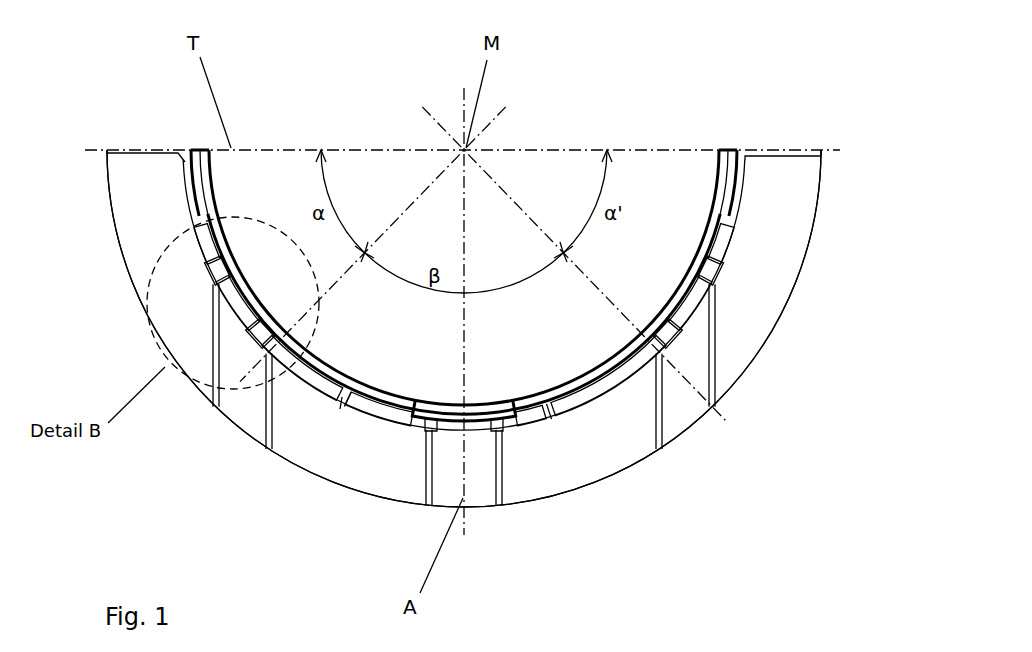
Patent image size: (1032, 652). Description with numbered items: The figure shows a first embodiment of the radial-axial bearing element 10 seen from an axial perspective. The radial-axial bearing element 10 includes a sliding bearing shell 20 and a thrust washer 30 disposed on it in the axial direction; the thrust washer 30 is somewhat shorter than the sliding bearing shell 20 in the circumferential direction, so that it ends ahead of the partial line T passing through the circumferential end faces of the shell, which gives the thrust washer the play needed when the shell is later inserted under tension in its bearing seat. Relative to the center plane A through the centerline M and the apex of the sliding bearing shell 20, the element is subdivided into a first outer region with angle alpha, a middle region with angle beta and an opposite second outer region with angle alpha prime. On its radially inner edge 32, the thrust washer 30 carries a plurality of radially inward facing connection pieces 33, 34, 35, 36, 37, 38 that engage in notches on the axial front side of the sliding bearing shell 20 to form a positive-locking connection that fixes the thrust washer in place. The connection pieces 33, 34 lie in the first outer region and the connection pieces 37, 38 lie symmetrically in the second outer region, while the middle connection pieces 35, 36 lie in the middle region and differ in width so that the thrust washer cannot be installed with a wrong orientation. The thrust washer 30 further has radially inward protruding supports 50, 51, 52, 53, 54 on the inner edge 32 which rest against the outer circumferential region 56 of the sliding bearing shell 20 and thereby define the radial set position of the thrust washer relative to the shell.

The radial-axial bearing element 10 is at (158, 97).
The sliding bearing shell 20 is at (718, 183).
The thrust washer 30 is at (799, 172).
The radially inner edge 32 is at (243, 300).
The connection piece 33 is at (220, 265).
The connection piece 34 is at (255, 328).
The middle connection piece 35 is at (392, 418).
The middle connection piece 36 is at (537, 410).
The connection piece 37 is at (640, 330).
The connection piece 38 is at (712, 283).
The support 50 is at (188, 192).
The support 51 is at (268, 352).
The support 52 is at (474, 432).
The support 53 is at (610, 392).
The support 54 is at (740, 195).
The outer circumferential region 56 is at (713, 245).